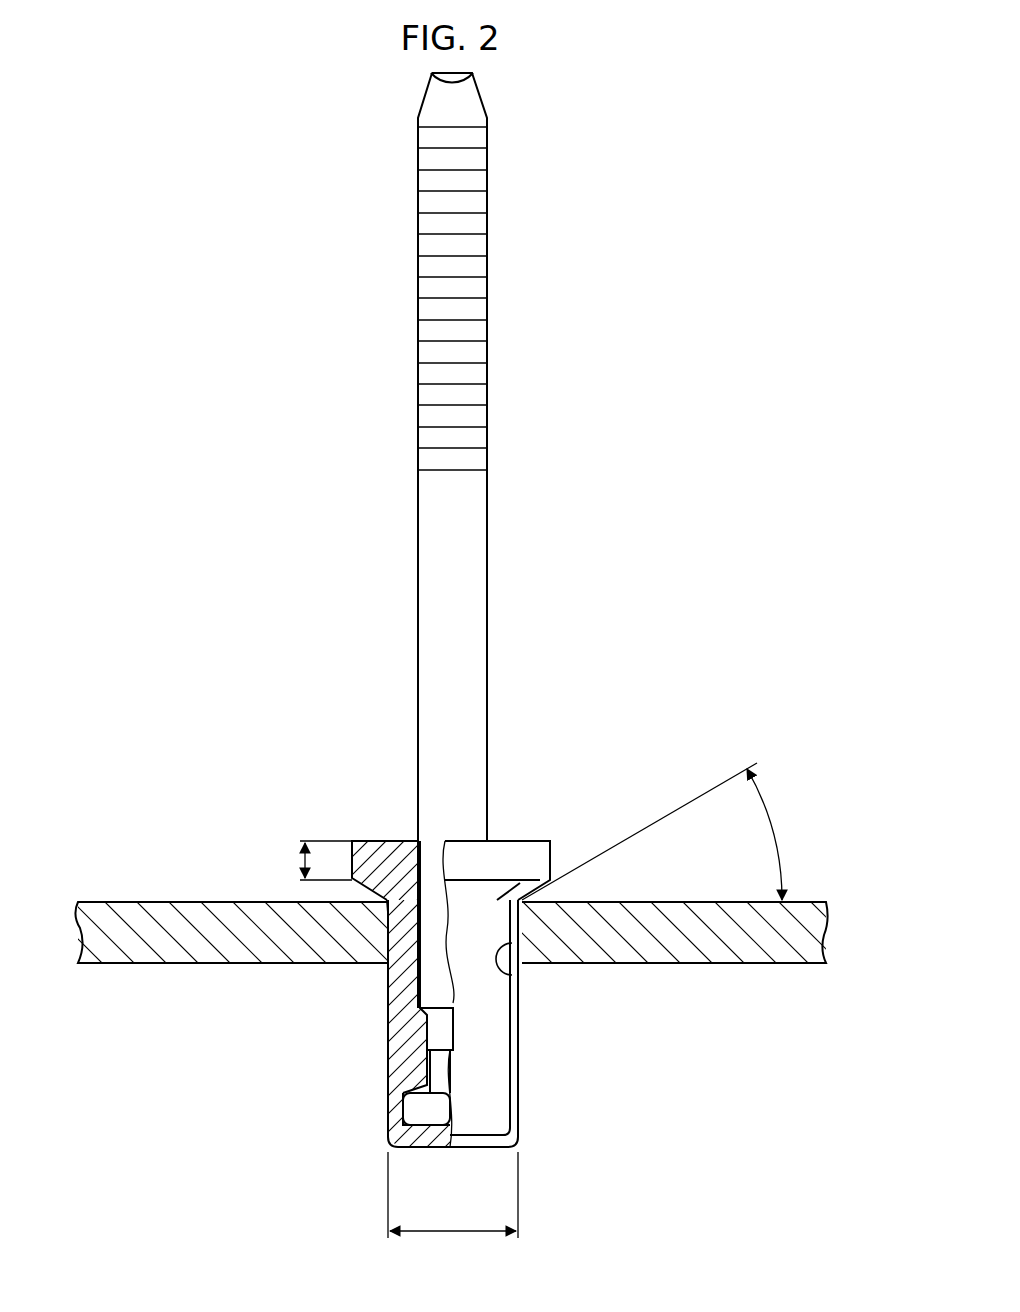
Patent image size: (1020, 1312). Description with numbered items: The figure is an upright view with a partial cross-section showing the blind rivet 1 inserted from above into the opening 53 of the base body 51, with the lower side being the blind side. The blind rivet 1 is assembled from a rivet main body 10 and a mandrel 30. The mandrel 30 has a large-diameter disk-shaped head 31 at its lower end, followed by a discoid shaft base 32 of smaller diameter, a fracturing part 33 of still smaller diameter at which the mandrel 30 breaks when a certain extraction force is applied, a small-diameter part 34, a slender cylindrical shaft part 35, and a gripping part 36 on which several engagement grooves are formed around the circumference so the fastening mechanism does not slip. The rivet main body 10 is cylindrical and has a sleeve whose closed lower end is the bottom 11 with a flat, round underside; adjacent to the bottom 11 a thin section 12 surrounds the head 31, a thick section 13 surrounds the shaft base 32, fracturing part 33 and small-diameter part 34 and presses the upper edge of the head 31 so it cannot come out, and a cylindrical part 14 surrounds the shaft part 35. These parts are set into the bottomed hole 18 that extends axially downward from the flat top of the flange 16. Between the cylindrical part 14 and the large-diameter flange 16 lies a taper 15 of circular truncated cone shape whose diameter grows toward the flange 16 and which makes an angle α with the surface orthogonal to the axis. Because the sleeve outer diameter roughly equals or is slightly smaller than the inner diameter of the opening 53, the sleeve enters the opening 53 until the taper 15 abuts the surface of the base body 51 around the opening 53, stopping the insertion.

The blind rivet 1 is at (668, 405).
The rivet main body 10 is at (567, 1082).
The bottom 11 is at (428, 1150).
The thin section 12 is at (402, 1106).
The thick section 13 is at (395, 1063).
The cylindrical part 14 is at (405, 985).
The taper 15 is at (385, 899).
The flange 16 is at (373, 841).
The bottomed hole 18 is at (433, 848).
The mandrel 30 is at (490, 342).
The head 31 is at (453, 1112).
The shaft base 32 is at (455, 1107).
The fracturing part 33 is at (445, 1075).
The small-diameter part 34 is at (443, 1028).
The shaft part 35 is at (470, 512).
The gripping part 36 is at (490, 237).
The base body 51 is at (748, 965).
The opening 53 is at (517, 977).